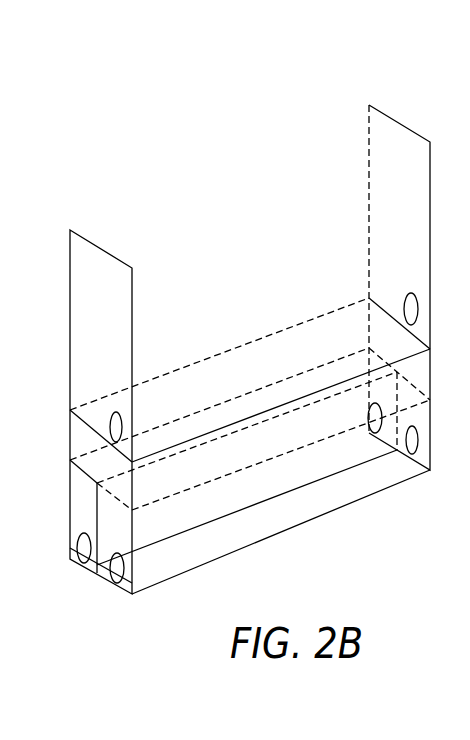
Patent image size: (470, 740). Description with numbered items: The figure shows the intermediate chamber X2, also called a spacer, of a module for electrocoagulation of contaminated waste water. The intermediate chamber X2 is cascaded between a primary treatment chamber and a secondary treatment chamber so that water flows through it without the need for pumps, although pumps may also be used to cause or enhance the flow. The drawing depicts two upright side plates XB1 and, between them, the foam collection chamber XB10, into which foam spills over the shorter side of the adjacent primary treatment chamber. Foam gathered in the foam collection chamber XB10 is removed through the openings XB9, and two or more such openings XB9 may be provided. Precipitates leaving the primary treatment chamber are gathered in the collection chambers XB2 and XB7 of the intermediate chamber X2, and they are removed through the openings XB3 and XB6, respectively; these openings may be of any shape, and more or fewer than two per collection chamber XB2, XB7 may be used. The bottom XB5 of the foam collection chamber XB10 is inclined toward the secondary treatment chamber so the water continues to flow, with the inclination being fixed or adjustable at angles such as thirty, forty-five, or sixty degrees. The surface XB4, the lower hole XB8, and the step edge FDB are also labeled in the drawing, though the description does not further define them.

The intermediate chamber X2 is at (256, 50).
The side plate XB1 is at (250, 349).
The collection chamber XB2 is at (174, 531).
The opening XB3 is at (77, 548).
The sloped top surface XB4 is at (250, 385).
The bottom of the foam collection chamber XB5 is at (219, 379).
The opening XB6 is at (428, 470).
The collection chamber XB7 is at (292, 513).
The bottom hole XB8 is at (110, 582).
The opening XB9 is at (110, 432).
The foam collection chamber XB10 is at (227, 268).
The step edge FDB is at (93, 465).